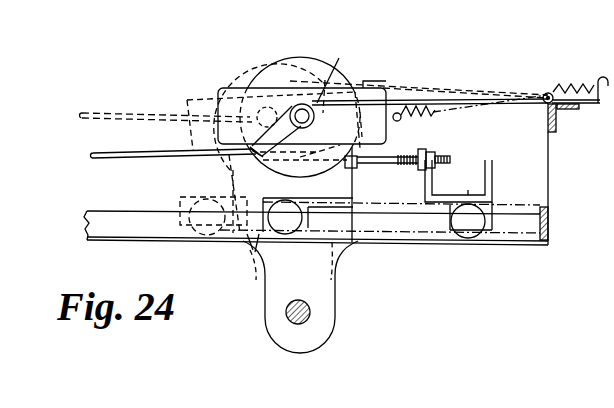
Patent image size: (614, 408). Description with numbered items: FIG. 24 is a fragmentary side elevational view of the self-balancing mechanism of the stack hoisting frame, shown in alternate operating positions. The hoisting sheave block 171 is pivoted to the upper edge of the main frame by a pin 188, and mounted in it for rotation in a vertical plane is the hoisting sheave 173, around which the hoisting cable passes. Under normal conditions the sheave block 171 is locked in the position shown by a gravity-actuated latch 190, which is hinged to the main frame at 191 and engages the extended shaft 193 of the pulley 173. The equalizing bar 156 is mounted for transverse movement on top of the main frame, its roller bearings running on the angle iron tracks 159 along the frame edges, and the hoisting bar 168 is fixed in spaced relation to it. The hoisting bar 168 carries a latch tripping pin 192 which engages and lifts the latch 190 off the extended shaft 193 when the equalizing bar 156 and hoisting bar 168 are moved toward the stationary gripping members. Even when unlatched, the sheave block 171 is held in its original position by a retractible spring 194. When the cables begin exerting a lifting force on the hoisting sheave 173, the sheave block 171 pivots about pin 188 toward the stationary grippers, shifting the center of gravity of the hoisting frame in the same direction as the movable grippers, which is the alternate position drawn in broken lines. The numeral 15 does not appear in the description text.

The frame base 15 is at (347, 188).
The equalizing bar 156 is at (248, 242).
The angle iron tracks 159 is at (510, 232).
The hoisting bar 168 is at (493, 173).
The hoisting sheave block 171 is at (378, 87).
The hoisting sheave 173 is at (296, 57).
The pin 188 is at (310, 316).
The gravity-actuated latch 190 is at (83, 121).
The hinge 191 is at (547, 94).
The latch tripping pin 192 is at (357, 170).
The extended shaft 193 is at (304, 112).
The retractible spring 194 is at (434, 118).